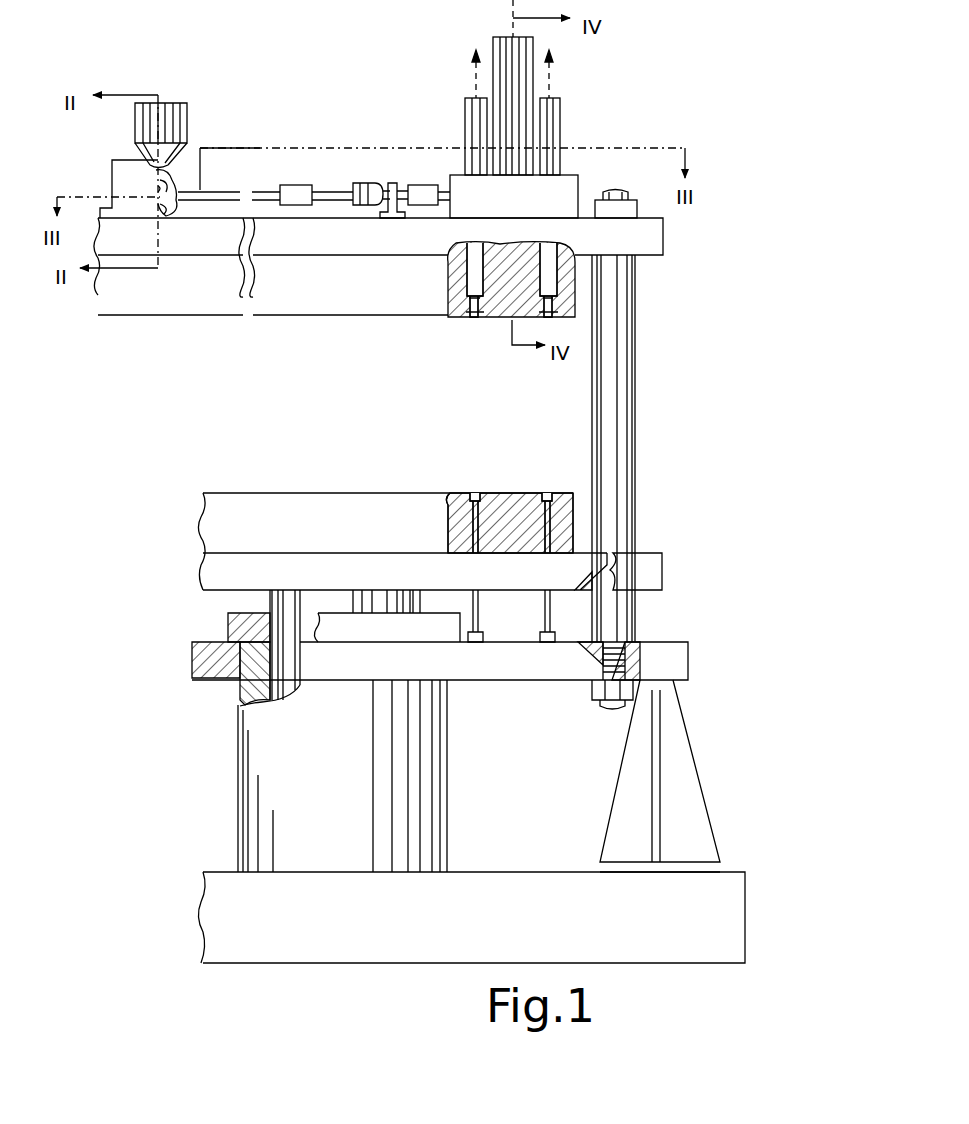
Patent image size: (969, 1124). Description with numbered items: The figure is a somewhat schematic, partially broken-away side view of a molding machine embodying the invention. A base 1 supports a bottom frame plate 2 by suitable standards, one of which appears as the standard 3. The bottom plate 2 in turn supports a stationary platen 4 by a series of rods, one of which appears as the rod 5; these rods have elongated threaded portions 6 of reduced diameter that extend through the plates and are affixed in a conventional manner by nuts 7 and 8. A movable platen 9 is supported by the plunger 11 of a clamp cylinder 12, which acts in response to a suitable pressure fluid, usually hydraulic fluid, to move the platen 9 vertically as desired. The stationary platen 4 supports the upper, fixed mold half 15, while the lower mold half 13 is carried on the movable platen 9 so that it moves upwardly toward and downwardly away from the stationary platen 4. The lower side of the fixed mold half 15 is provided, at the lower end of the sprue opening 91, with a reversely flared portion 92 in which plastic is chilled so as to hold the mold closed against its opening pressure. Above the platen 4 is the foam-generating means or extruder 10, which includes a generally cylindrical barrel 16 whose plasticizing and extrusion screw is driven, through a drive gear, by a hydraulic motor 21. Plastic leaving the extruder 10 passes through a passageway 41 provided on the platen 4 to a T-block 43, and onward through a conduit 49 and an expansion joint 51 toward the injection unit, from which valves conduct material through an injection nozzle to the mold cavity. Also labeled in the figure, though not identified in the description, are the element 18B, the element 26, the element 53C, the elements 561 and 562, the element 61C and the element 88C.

The base 1 is at (740, 936).
The bottom frame plate 2 is at (678, 665).
The standard 3 is at (690, 832).
The stationary platen 4 is at (658, 240).
The rod 5 is at (630, 420).
The elongated threaded portion 6 is at (620, 642).
The nut 7 is at (624, 200).
The nut 8 is at (596, 690).
The movable platen 9 is at (660, 577).
The foam generating means 10 is at (212, 143).
The plunger 11 is at (283, 618).
The clamp cylinder 12 is at (428, 806).
The lower mold half 13 is at (404, 498).
The upper mold half 15 is at (325, 303).
The cylindrical barrel 16 is at (166, 178).
The rod 18B is at (163, 182).
The hydraulic motor 21 is at (122, 168).
The nozzle 26 is at (133, 125).
The passageway 41 is at (326, 185).
The T-block 43 is at (376, 188).
The conduit 49 is at (398, 183).
The expansion joint 51 is at (422, 190).
The central cylinder 53C is at (530, 51).
The side cylinder 561 is at (556, 117).
The side cylinder 562 is at (468, 104).
The block 61C is at (568, 188).
The mount 88C is at (548, 280).
The sprue opening 91 is at (552, 298).
The reversely flared portion 92 is at (548, 312).